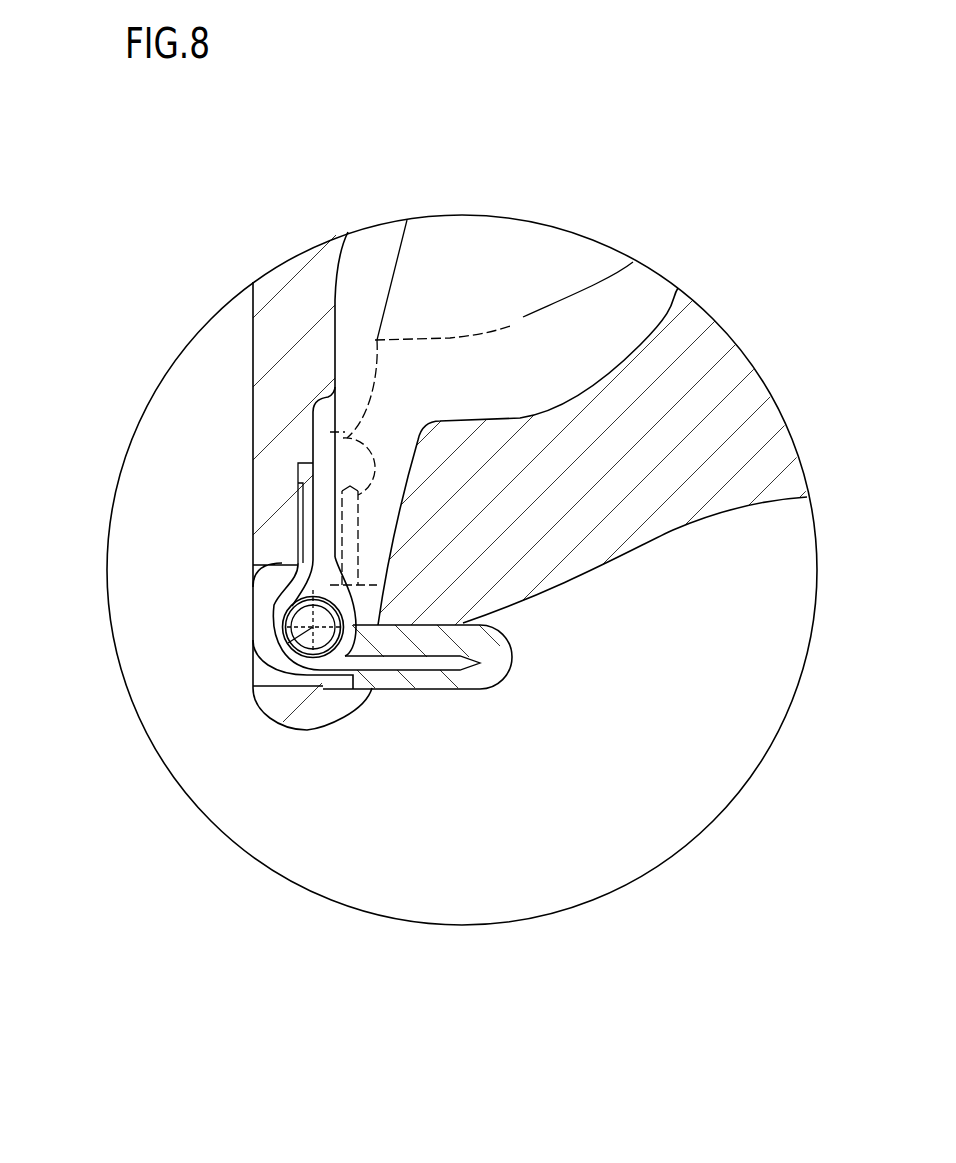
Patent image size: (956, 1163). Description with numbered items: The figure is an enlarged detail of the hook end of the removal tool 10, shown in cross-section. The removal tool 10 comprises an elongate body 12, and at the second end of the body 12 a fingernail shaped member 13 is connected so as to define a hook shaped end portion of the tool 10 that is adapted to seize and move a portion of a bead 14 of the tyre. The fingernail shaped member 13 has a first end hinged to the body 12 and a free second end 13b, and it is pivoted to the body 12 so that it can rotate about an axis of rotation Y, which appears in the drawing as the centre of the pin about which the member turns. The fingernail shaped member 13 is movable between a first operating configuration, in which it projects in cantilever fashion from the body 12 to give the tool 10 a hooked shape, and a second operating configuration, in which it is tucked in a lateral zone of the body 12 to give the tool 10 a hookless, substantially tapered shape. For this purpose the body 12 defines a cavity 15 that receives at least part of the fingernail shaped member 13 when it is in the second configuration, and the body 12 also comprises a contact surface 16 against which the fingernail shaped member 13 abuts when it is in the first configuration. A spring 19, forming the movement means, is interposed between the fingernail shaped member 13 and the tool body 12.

The removal tool 10 is at (232, 345).
The elongate body 12 is at (278, 390).
The fingernail shaped member 13 is at (377, 340).
The free second end 13b is at (497, 664).
The bead 14 is at (418, 275).
The cavity 15 is at (323, 418).
The contact surface 16 is at (255, 587).
The spring 19 is at (305, 500).
The axis of rotation Y is at (258, 663).